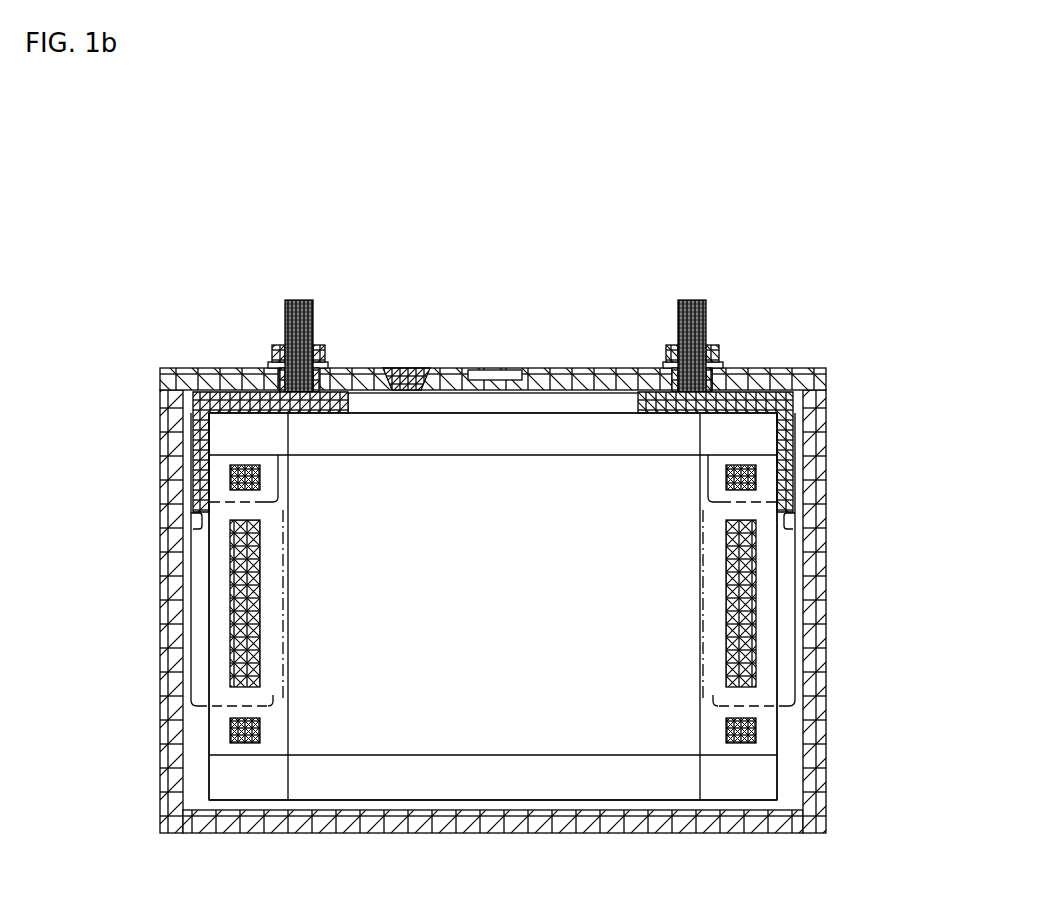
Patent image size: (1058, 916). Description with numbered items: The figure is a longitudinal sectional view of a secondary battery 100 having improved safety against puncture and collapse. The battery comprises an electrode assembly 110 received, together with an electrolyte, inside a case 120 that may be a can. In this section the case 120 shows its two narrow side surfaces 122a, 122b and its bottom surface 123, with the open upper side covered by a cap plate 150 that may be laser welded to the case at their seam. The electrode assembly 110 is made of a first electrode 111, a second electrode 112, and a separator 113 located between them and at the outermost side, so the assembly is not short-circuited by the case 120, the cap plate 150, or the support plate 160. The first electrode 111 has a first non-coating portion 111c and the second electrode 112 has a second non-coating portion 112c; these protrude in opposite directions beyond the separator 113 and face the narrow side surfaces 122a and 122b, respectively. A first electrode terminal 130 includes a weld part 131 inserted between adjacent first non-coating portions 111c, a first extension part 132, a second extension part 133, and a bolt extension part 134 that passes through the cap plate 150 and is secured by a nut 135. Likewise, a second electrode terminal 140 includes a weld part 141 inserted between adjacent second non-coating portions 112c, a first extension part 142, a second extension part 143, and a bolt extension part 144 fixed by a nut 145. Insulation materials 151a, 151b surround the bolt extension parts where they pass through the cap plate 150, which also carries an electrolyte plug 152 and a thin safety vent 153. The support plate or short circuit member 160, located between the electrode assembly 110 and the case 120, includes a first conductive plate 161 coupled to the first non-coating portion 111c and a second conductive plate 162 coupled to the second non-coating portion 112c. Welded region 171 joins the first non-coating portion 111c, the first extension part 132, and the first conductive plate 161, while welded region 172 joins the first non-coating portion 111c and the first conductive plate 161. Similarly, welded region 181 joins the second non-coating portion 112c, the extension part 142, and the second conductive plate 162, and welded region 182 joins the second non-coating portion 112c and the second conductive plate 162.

The secondary battery 100 is at (668, 168).
The electrode assembly 110 is at (492, 657).
The first electrode 111 is at (780, 768).
The first non-coating portion 111c is at (770, 785).
The second electrode 112 is at (205, 765).
The second non-coating portion 112c is at (215, 783).
The separator 113 is at (445, 775).
The case 120 is at (497, 645).
The narrow side surface 122a is at (160, 413).
The narrow side surface 122b is at (803, 400).
The bottom surface 123 is at (590, 820).
The first electrode terminal 130 is at (710, 306).
The weld part 131 is at (795, 635).
The first extension part 132 is at (790, 440).
The second extension part 133 is at (782, 385).
The bolt extension part 134 is at (689, 301).
The nut 135 is at (663, 352).
The second electrode terminal 140 is at (300, 306).
The weld part 141 is at (191, 633).
The first extension part 142 is at (197, 440).
The second extension part 143 is at (196, 372).
The bolt extension part 144 is at (302, 299).
The nut 145 is at (328, 350).
The cap plate 150 is at (502, 349).
The insulation material 151a is at (730, 360).
The insulation material 151b is at (268, 360).
The electrolyte plug 152 is at (405, 370).
The safety vent 153 is at (497, 371).
The support plate 160 is at (378, 760).
The first conductive plate 161 is at (735, 757).
The second conductive plate 162 is at (250, 757).
The welded region 171 is at (758, 566).
The welded region 172 is at (758, 480).
The welded region 181 is at (230, 572).
The welded region 182 is at (230, 478).